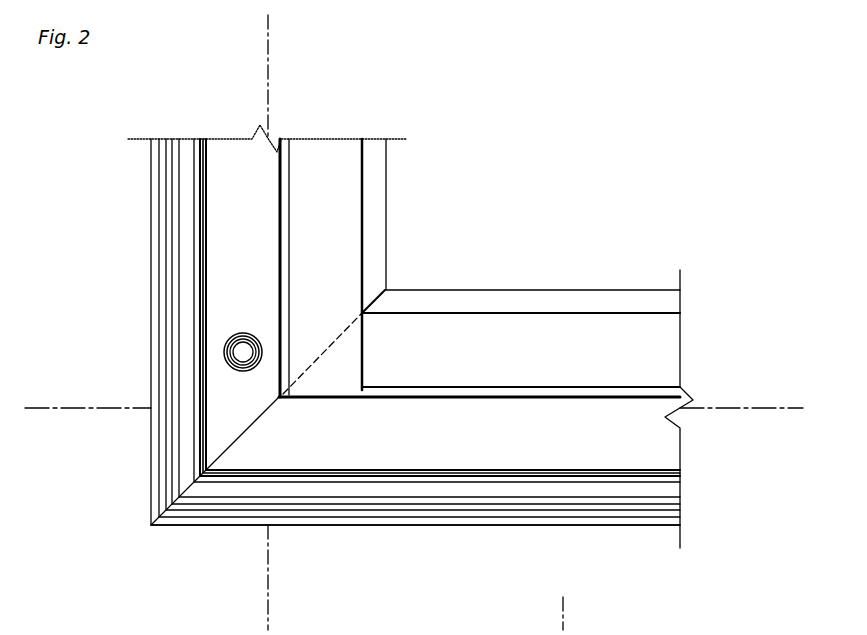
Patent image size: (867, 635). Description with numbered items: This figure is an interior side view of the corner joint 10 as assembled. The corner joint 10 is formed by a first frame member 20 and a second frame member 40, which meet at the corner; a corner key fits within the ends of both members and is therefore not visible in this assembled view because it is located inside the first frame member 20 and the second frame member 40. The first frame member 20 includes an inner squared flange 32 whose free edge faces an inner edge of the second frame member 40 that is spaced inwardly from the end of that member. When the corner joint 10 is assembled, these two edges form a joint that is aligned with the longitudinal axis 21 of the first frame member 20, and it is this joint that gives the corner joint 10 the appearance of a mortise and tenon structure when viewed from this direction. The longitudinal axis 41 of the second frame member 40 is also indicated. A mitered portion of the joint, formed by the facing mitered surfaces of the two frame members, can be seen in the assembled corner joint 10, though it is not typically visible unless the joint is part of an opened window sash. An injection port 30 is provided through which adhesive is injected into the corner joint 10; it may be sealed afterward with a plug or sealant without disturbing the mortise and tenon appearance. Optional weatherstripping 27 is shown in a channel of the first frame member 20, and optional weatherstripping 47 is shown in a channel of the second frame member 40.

The corner joint 10 is at (628, 165).
The first frame member 20 is at (150, 271).
The longitudinal axis 21 is at (272, 108).
The weatherstripping 27 is at (193, 138).
The injection port 30 is at (243, 352).
The inner squared flange 32 is at (340, 382).
The second frame member 40 is at (447, 525).
The longitudinal axis 41 is at (707, 408).
The weatherstripping 47 is at (677, 492).